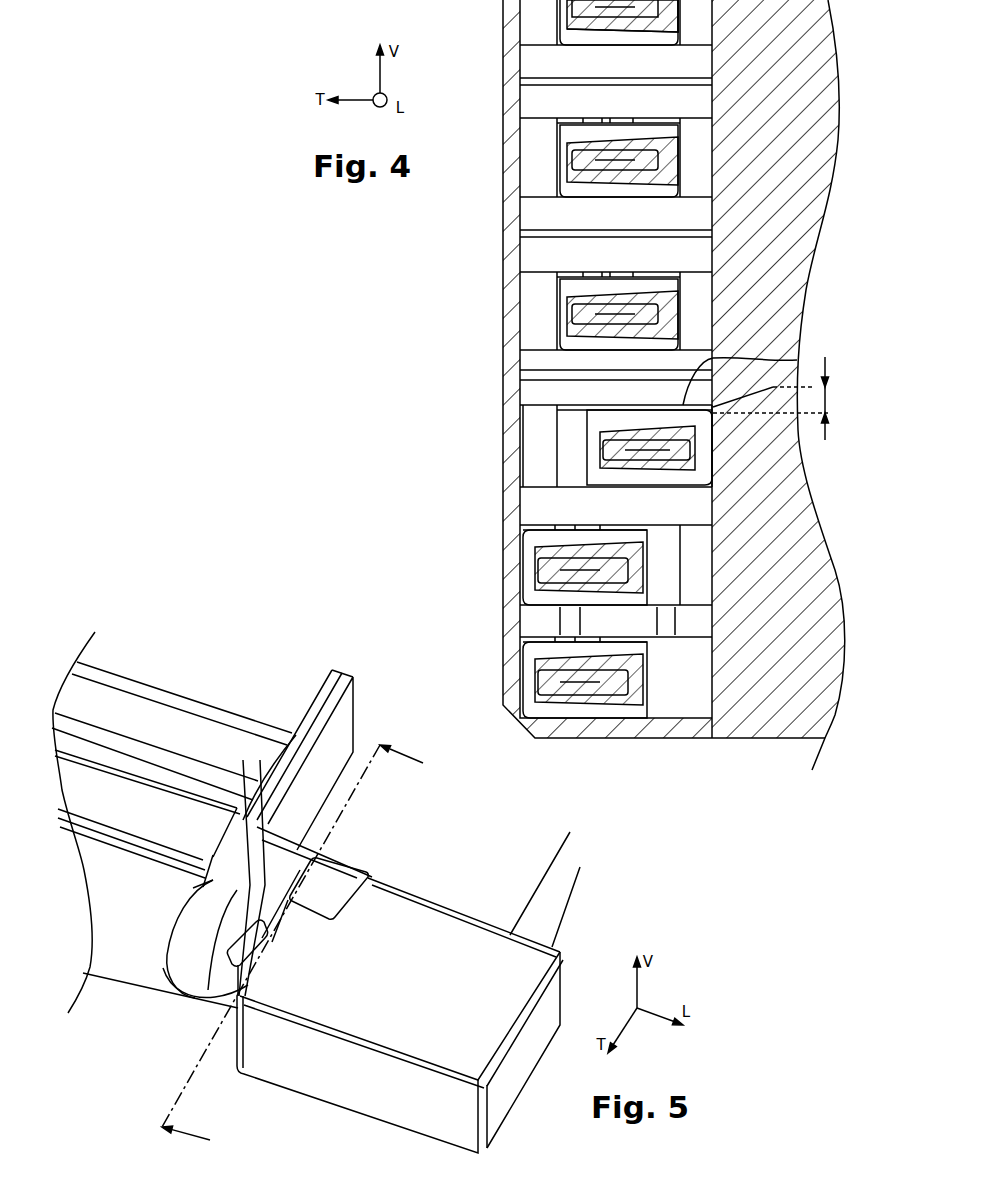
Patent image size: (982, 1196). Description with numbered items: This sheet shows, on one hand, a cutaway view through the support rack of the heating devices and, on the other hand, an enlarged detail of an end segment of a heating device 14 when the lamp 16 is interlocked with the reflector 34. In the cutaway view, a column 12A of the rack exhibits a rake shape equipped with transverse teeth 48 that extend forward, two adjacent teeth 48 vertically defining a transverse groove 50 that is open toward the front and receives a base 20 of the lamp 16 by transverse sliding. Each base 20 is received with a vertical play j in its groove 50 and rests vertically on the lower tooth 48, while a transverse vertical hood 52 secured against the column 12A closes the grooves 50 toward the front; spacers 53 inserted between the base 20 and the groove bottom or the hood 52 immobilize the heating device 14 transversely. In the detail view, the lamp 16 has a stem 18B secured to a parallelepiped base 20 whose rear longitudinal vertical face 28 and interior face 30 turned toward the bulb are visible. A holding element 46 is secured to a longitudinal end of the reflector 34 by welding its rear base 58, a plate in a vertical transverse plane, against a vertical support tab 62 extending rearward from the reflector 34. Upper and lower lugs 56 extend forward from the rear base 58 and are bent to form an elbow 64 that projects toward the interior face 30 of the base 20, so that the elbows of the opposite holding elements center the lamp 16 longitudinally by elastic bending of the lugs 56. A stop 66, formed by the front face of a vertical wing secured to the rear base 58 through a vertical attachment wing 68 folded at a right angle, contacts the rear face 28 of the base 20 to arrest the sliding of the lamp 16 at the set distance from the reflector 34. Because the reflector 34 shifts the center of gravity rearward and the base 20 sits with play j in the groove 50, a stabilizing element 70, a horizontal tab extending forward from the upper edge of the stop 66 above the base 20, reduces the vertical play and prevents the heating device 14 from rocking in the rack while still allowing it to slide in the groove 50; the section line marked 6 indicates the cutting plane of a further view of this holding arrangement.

In FIG. 4, the column 12A is at (773, 703).
In FIG. 5, the heating device 14 is at (351, 648).
In FIG. 5, the lamp 16 is at (108, 997).
In FIG. 5, the stem 18B is at (207, 1018).
In FIG. 4, the base 20 is at (690, 421).
In FIG. 5, the base 20 is at (440, 970).
In FIG. 4, the rear longitudinal vertical face 28 is at (720, 470).
In FIG. 5, the interior face 30 is at (245, 980).
In FIG. 5, the reflector 34 is at (158, 675).
In FIG. 5, the holding element 46 is at (270, 813).
In FIG. 4, the tooth 48 is at (545, 392).
In FIG. 4, the groove 50 is at (513, 438).
In FIG. 4, the hood 52 is at (512, 323).
In FIG. 4, the spacer 53 is at (698, 295).
In FIG. 5, the lug 56 is at (207, 1013).
In FIG. 5, the rear base 58 is at (330, 692).
In FIG. 5, the support tab 62 is at (310, 707).
In FIG. 5, the elbow 64 is at (277, 933).
In FIG. 4, the stop 66 is at (717, 442).
In FIG. 5, the attachment wing 68 is at (330, 750).
In FIG. 4, the stabilizing element 70 is at (797, 360).
In FIG. 5, the stabilizing element 70 is at (350, 865).
In FIG. 4, the vertical play j is at (778, 398).
In FIG. 5, the section line 6 is at (292, 937).